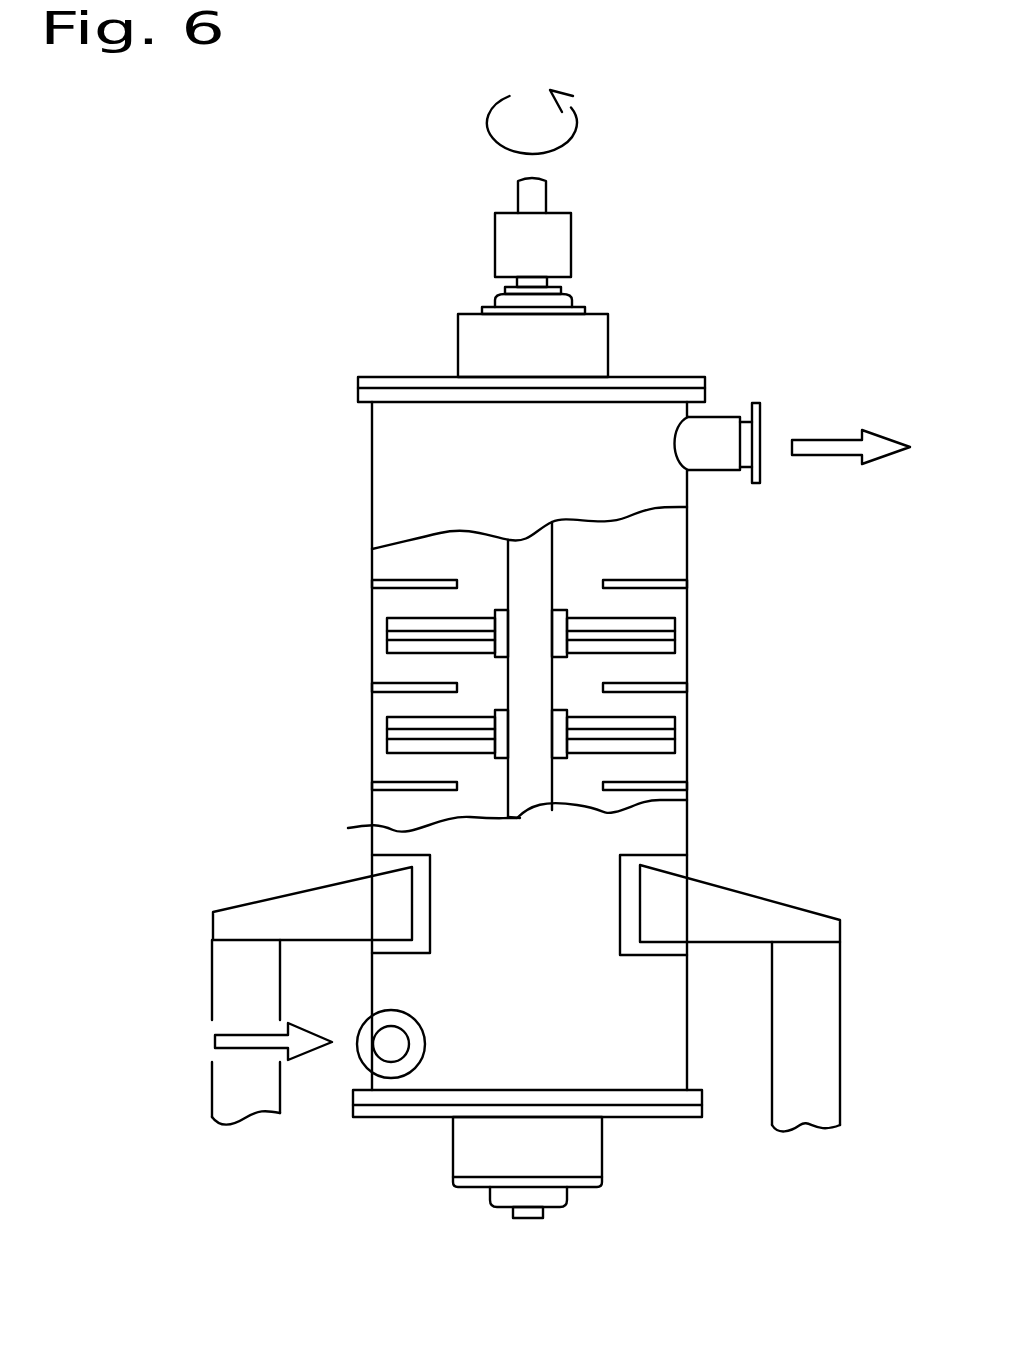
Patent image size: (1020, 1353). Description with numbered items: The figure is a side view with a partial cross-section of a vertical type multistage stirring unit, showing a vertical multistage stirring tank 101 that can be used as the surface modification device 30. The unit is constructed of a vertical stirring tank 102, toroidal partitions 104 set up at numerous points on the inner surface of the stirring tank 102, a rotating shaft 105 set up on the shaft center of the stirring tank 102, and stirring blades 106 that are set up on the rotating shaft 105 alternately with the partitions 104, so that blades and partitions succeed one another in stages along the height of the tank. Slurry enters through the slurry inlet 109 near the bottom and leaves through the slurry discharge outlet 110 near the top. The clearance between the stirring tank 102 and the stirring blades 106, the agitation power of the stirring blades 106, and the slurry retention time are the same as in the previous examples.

The surface modification device 30 is at (549, 687).
The vertical multistage stirring tank 101 is at (549, 655).
The vertical stirring tank 102 is at (372, 460).
The toroidal partitions 104 is at (400, 580).
The rotating shaft 105 is at (533, 797).
The stirring blades 106 is at (580, 612).
The slurry inlet 109 is at (422, 1043).
The slurry discharge outlet 110 is at (718, 418).